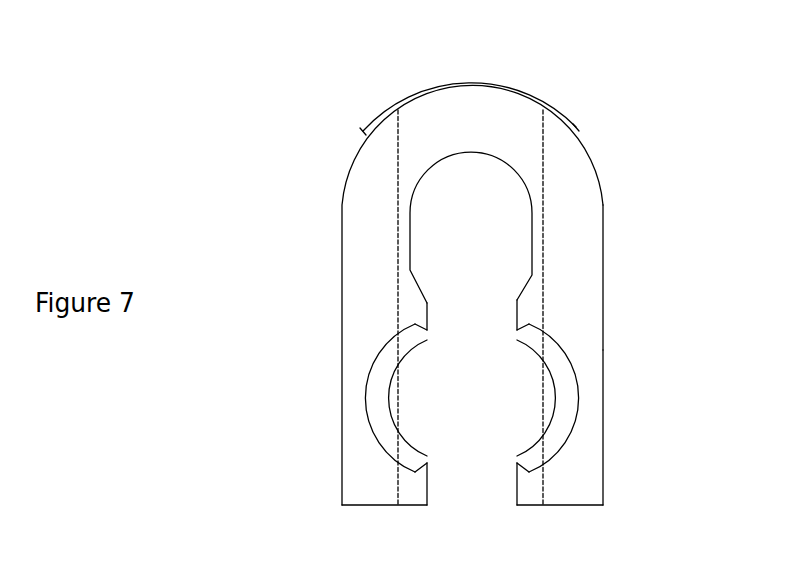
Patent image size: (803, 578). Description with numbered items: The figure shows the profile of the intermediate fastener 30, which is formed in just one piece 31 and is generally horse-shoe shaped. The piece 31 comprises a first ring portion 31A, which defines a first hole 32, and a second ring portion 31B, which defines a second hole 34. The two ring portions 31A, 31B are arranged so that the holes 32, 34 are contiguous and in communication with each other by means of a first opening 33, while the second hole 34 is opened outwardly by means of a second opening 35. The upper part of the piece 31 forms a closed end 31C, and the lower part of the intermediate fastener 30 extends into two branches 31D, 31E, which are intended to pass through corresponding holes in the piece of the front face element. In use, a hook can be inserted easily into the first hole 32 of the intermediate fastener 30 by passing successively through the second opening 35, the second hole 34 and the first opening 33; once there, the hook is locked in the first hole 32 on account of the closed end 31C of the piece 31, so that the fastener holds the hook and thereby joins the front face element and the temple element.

The intermediate fastener 30 is at (338, 115).
The piece 31 is at (513, 130).
The first ring portion 31A is at (573, 197).
The second ring portion 31B is at (583, 392).
The closed end 31C is at (445, 110).
The branch 31D is at (583, 488).
The branch 31E is at (373, 490).
The first hole 32 is at (435, 238).
The first opening 33 is at (483, 315).
The second hole 34 is at (435, 402).
The second opening 35 is at (483, 500).